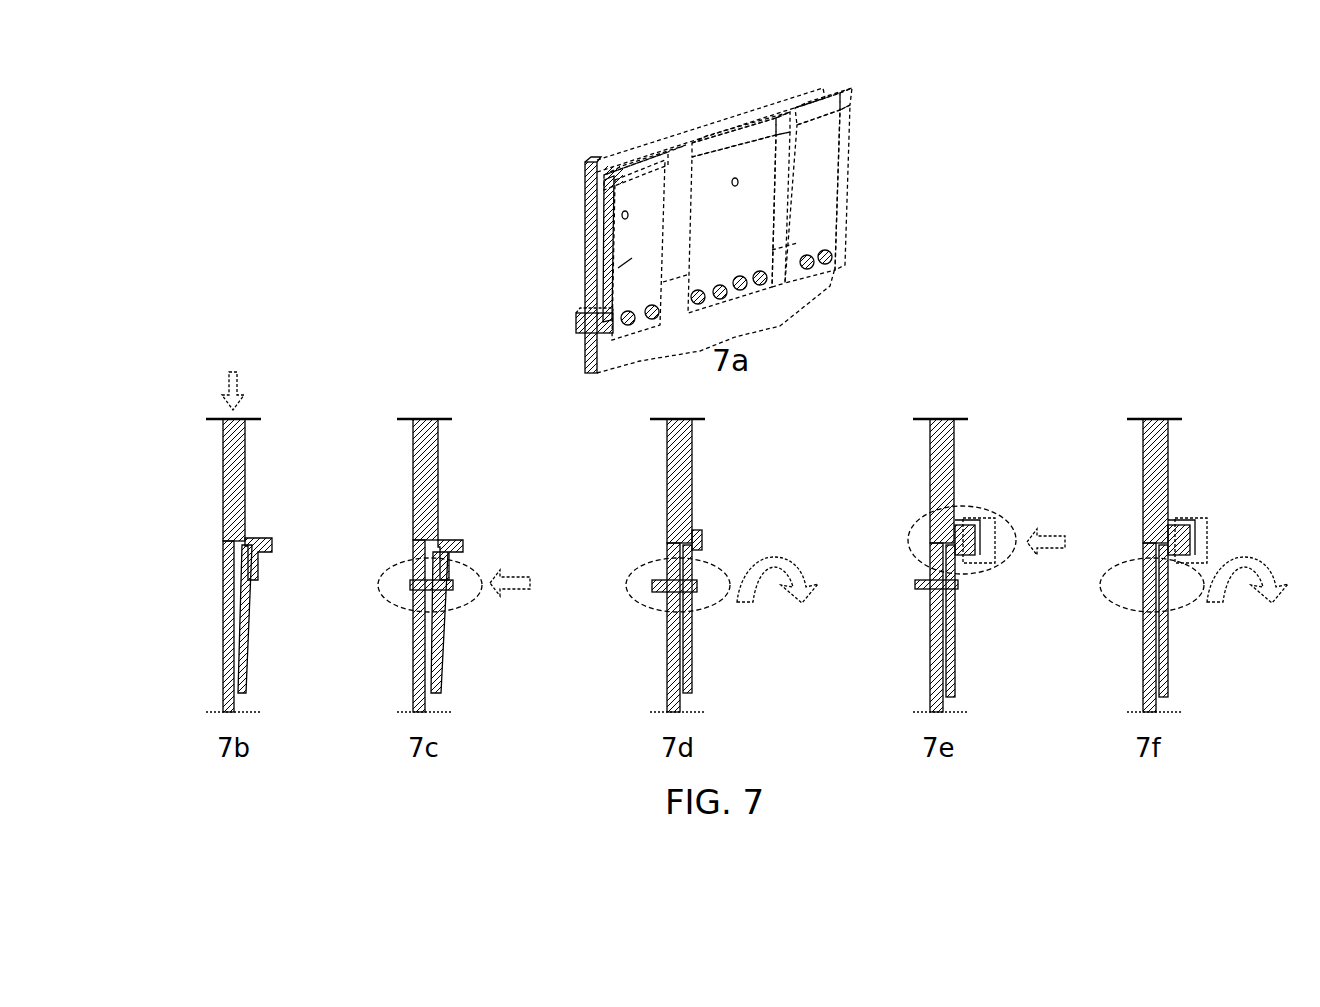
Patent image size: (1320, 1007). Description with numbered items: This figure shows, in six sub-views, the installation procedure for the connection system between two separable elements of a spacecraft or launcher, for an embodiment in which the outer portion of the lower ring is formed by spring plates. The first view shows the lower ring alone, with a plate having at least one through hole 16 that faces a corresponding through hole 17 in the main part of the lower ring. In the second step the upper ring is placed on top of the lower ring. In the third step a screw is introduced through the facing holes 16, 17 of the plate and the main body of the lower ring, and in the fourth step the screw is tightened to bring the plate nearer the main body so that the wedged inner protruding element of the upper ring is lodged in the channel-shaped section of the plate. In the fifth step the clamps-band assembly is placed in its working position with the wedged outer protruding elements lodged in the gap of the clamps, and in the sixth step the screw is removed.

The through hole 16 is at (621, 216).
The through hole 17 is at (602, 210).